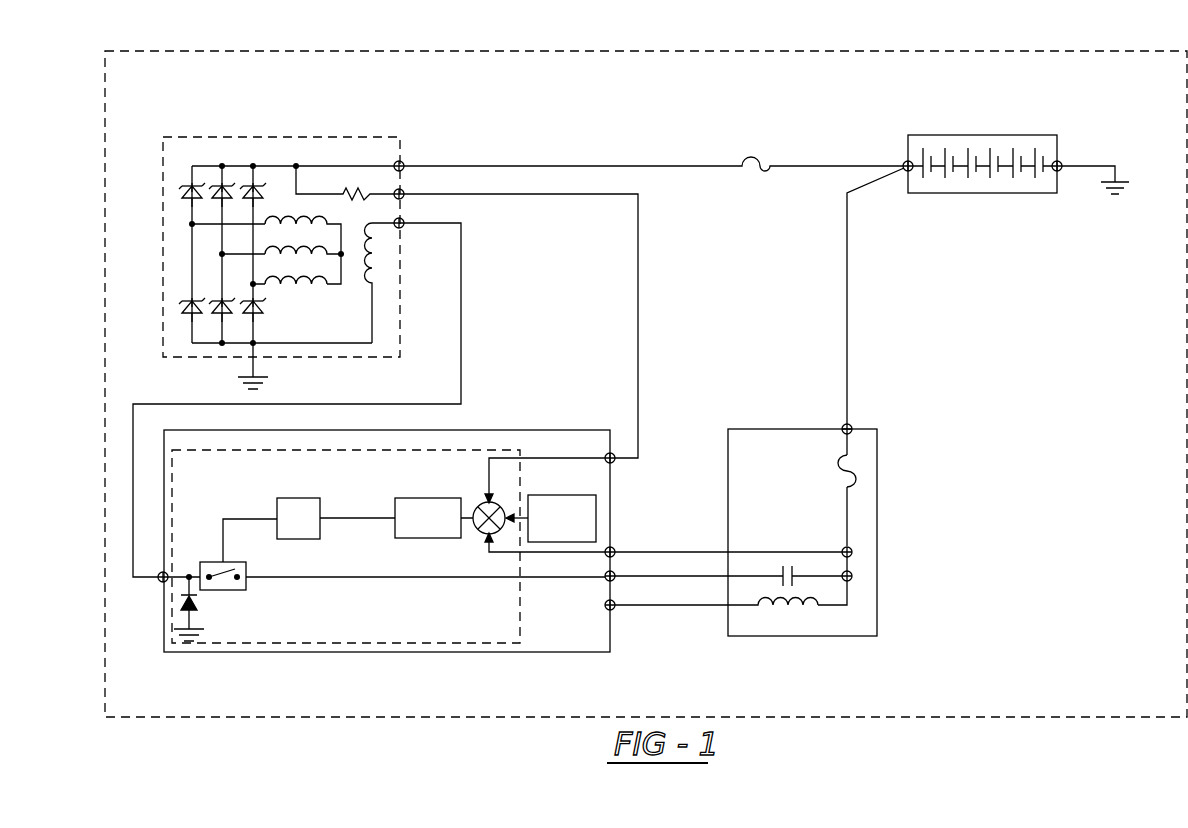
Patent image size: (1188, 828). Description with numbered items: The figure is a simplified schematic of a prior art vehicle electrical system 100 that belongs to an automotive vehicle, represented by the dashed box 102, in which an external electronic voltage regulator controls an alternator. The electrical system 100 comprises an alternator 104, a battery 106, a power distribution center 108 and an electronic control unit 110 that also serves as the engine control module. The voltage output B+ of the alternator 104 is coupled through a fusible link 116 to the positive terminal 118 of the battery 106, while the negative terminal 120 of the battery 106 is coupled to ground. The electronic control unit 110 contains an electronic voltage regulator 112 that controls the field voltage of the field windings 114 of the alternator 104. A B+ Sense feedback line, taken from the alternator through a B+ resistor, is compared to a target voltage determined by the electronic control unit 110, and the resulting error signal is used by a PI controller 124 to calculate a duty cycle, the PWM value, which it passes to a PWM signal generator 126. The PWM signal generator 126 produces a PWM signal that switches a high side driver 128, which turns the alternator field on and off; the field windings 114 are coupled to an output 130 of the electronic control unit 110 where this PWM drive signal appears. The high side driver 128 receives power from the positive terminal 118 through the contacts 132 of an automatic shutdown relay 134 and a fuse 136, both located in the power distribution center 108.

The electrical system 100 is at (1050, 106).
The vehicle 102 is at (1072, 51).
The alternator 104 is at (375, 137).
The battery 106 is at (909, 194).
The power distribution center 108 is at (866, 429).
The electronic control unit 110 is at (579, 430).
The electronic voltage regulator 112 is at (522, 618).
The field windings 114 is at (370, 271).
The fusible link 116 is at (747, 162).
The positive terminal 118 is at (905, 162).
The negative terminal 120 is at (1062, 162).
The PI controller 124 is at (427, 498).
The PWM signal generator 126 is at (305, 498).
The high side driver 128 is at (225, 594).
The output 130 is at (160, 582).
The contacts 132 is at (792, 566).
The automatic shutdown relay 134 is at (790, 610).
The fuse 136 is at (853, 462).